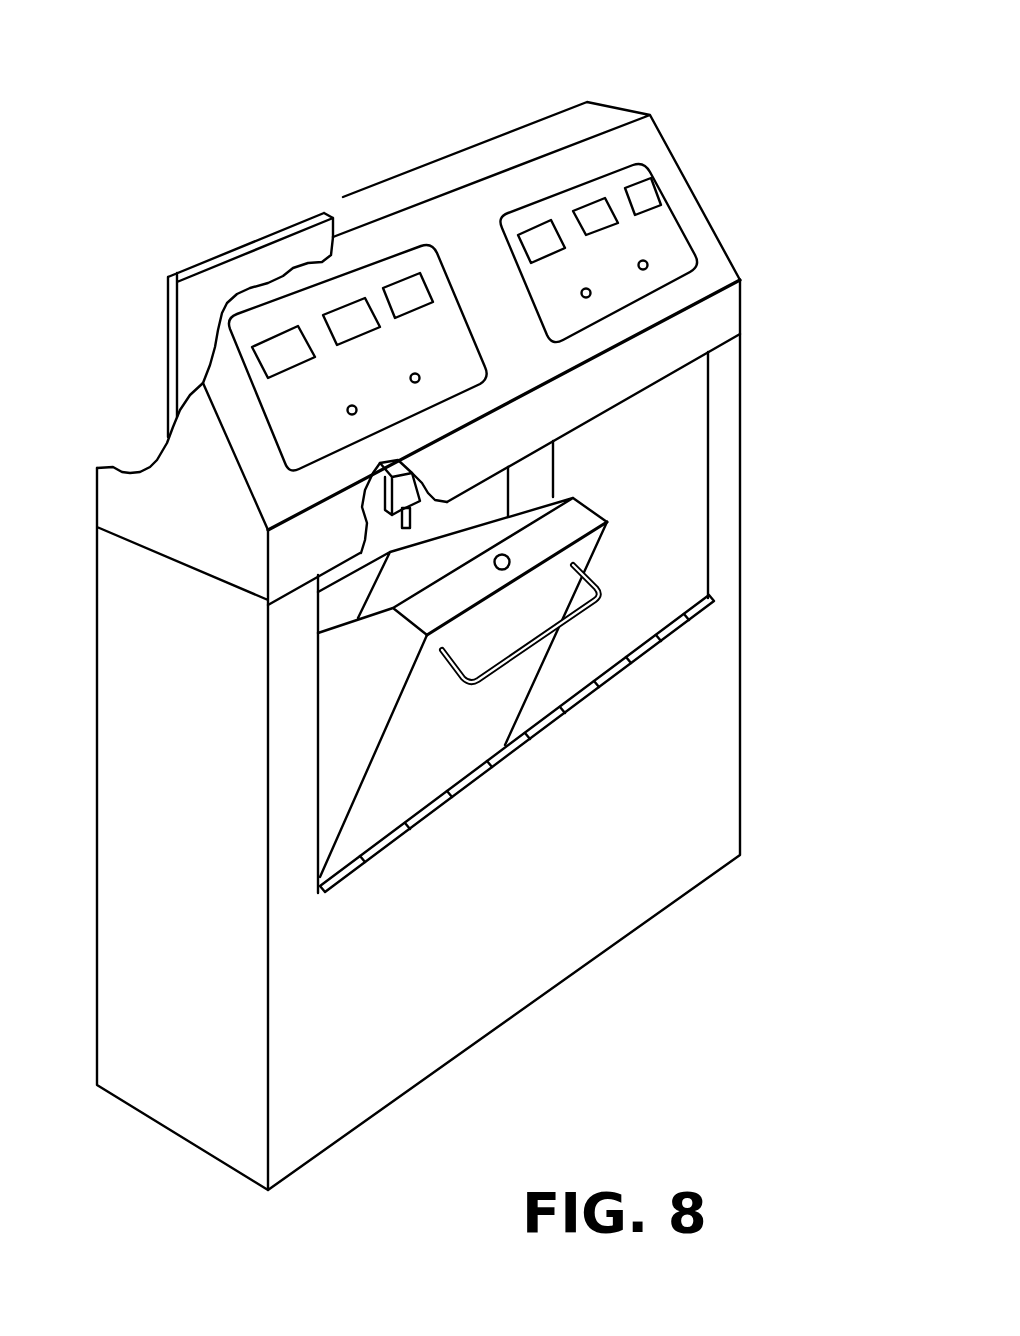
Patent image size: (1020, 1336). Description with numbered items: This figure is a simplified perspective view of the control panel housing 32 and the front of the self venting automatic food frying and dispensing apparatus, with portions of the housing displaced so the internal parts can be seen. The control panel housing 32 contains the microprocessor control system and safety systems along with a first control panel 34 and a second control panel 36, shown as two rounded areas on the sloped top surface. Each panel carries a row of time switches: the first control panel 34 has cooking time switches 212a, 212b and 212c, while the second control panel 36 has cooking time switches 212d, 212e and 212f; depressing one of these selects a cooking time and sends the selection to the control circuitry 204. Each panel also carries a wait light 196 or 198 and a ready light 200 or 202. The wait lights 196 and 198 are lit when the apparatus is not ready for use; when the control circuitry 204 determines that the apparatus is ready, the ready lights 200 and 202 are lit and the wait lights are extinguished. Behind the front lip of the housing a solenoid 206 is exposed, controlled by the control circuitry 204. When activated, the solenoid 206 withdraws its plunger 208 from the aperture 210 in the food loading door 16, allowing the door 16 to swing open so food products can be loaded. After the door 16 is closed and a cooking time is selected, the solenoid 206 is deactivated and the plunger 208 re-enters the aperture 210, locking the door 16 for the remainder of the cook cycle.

The food loading door 16 is at (442, 760).
The control panel housing 32 is at (465, 216).
The first control panel 34 is at (440, 332).
The second control panel 36 is at (660, 213).
The wait light 196 is at (410, 378).
The wait light 198 is at (648, 264).
The ready light 200 is at (347, 410).
The ready light 202 is at (590, 294).
The control circuitry 204 is at (224, 290).
The solenoid 206 is at (403, 488).
The plunger 208 is at (365, 522).
The aperture 210 is at (510, 557).
The cooking time switch 212a is at (283, 346).
The cooking time switch 212b is at (355, 316).
The cooking time switch 212c is at (408, 292).
The cooking time switch 212d is at (535, 234).
The cooking time switch 212e is at (596, 208).
The cooking time switch 212f is at (641, 191).